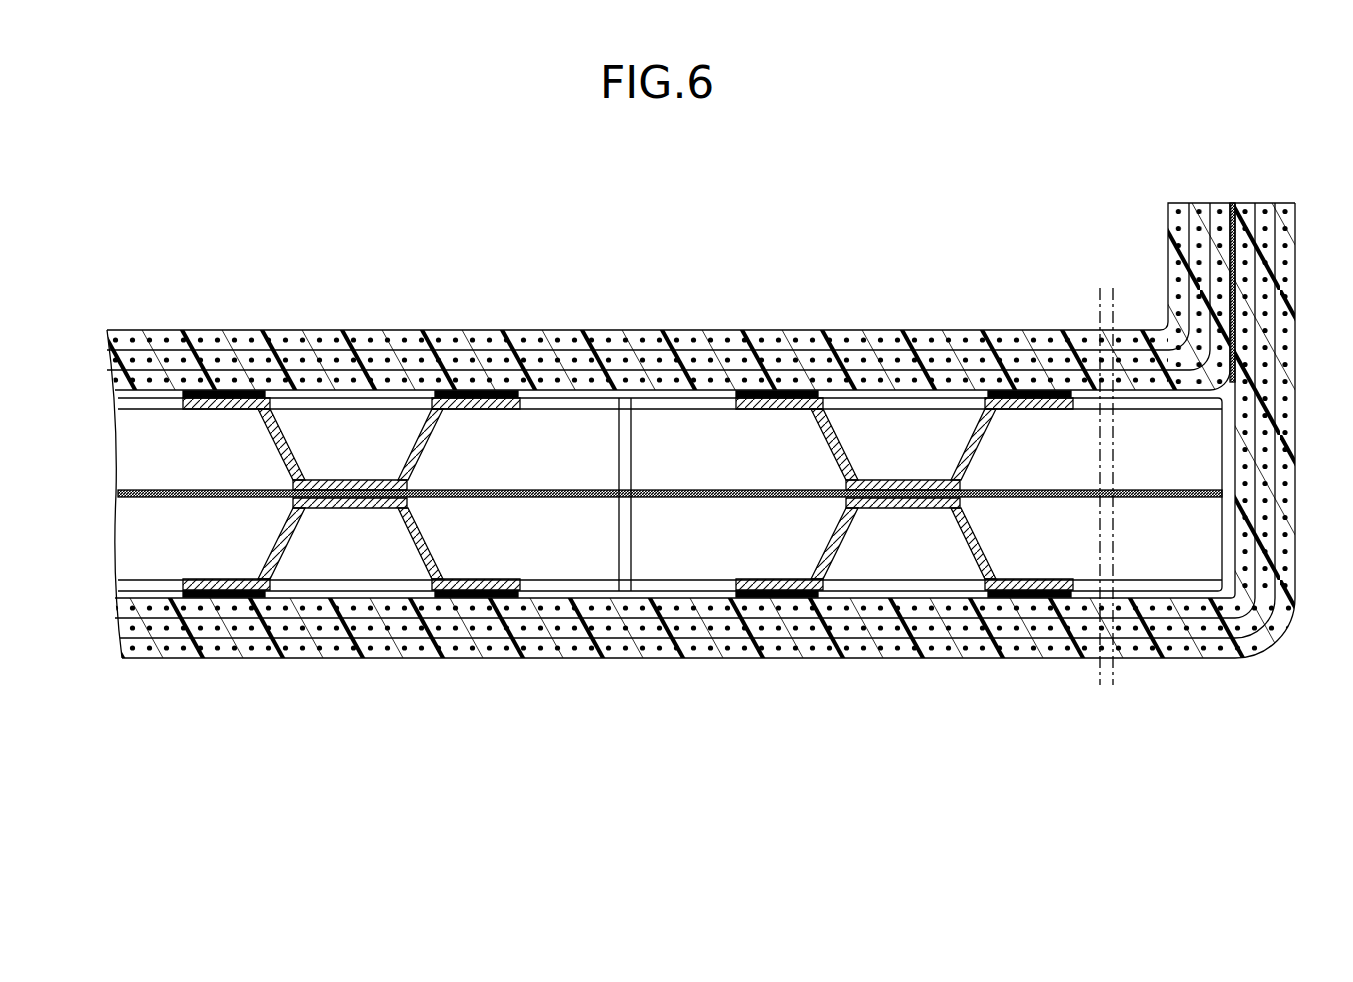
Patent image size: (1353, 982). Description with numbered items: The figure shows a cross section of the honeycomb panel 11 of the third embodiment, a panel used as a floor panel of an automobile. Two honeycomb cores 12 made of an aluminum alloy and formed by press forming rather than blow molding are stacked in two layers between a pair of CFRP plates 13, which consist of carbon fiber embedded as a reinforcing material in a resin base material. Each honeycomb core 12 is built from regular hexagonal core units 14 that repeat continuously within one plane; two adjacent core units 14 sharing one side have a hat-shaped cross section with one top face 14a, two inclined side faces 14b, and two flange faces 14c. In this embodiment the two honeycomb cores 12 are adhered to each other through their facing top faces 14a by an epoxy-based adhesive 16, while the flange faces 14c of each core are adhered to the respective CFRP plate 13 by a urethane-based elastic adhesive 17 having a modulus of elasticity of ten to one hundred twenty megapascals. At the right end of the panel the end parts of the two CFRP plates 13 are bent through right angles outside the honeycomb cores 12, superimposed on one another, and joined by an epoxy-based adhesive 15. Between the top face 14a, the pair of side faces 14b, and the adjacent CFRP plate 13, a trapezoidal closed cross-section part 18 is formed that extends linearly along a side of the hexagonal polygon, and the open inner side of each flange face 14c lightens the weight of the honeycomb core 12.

The honeycomb panel 11 is at (594, 277).
The honeycomb core 12 is at (296, 426).
The CFRP plate 13 is at (727, 327).
The core unit 14 is at (848, 436).
The top face 14a is at (298, 478).
The side face 14b is at (267, 418).
The flange face 14c is at (498, 411).
The adhesive 15 is at (1233, 205).
The adhesive 16 is at (412, 497).
The adhesive 17 is at (183, 393).
The closed cross-section part 18 is at (361, 455).